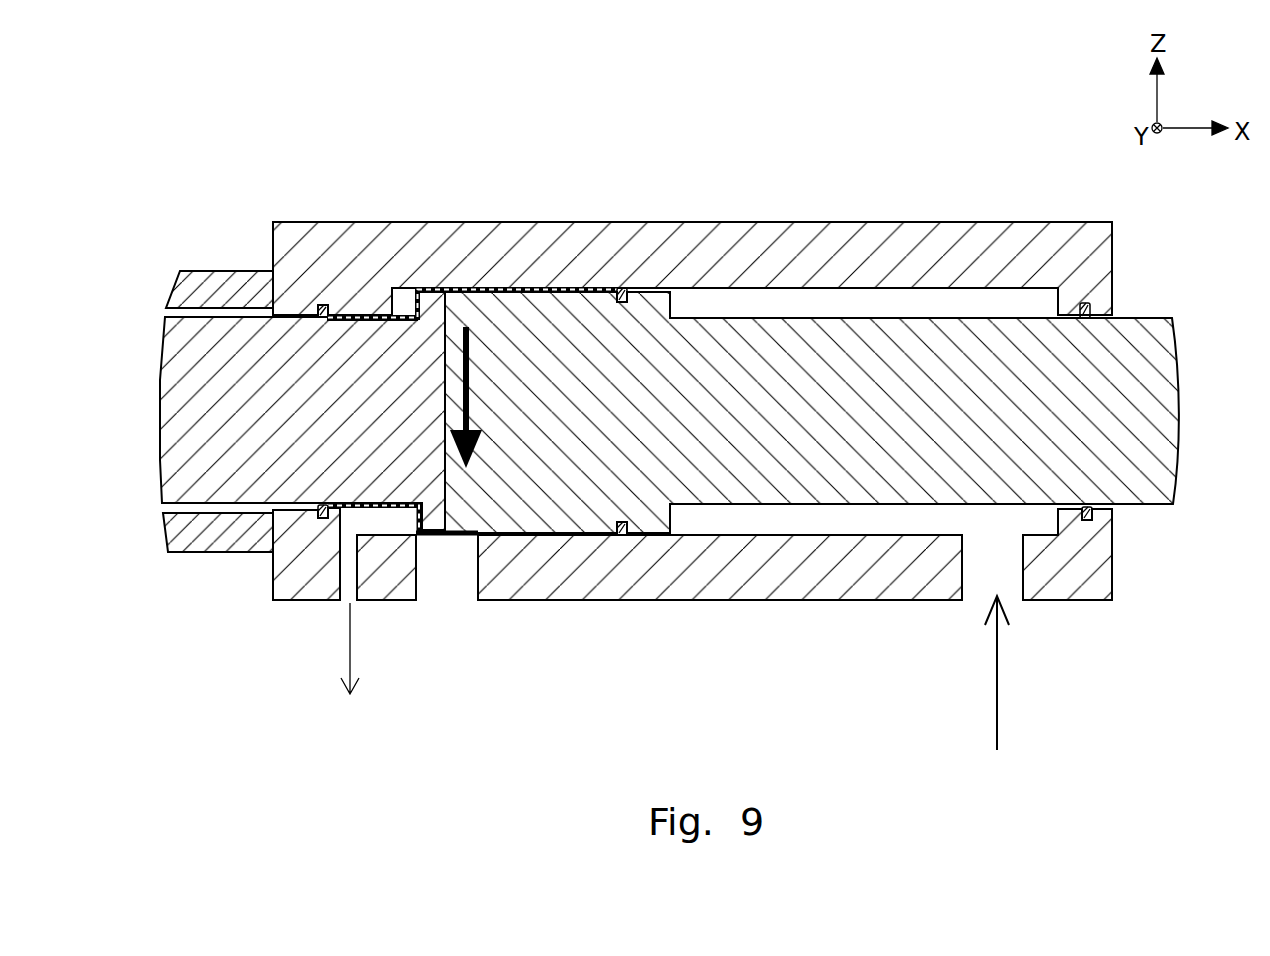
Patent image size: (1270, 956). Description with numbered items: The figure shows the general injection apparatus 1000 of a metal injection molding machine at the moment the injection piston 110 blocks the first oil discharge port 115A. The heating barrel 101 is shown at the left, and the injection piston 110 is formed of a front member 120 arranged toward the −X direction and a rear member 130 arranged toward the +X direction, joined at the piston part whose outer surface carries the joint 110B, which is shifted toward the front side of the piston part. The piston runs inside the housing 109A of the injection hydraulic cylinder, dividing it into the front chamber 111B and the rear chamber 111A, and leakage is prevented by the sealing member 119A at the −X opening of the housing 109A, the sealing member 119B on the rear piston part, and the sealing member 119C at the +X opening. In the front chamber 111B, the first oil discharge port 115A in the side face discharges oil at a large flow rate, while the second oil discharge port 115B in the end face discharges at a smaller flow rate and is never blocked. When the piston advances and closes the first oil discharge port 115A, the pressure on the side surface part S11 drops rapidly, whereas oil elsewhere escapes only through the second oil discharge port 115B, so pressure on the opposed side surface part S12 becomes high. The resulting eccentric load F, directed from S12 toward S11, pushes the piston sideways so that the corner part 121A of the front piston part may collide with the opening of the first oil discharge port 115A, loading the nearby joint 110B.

The injection apparatus 1000 is at (224, 153).
The heating barrel 101 is at (222, 276).
The injection piston 110 is at (932, 111).
The front member 120 is at (540, 302).
The rear member 130 is at (853, 327).
The housing 109A is at (797, 237).
The joint 110B is at (470, 545).
The rear chamber 111A is at (932, 307).
The front chamber 111B is at (360, 527).
The first oil discharge port 115A is at (453, 608).
The second oil discharge port 115B is at (338, 611).
The sealing member 119A is at (327, 306).
The sealing member 119B is at (621, 288).
The sealing member 119C is at (1090, 306).
The corner part 121A is at (436, 540).
The side surface part S11 is at (443, 540).
The side surface part S12 is at (537, 288).
The eccentric load F is at (472, 397).